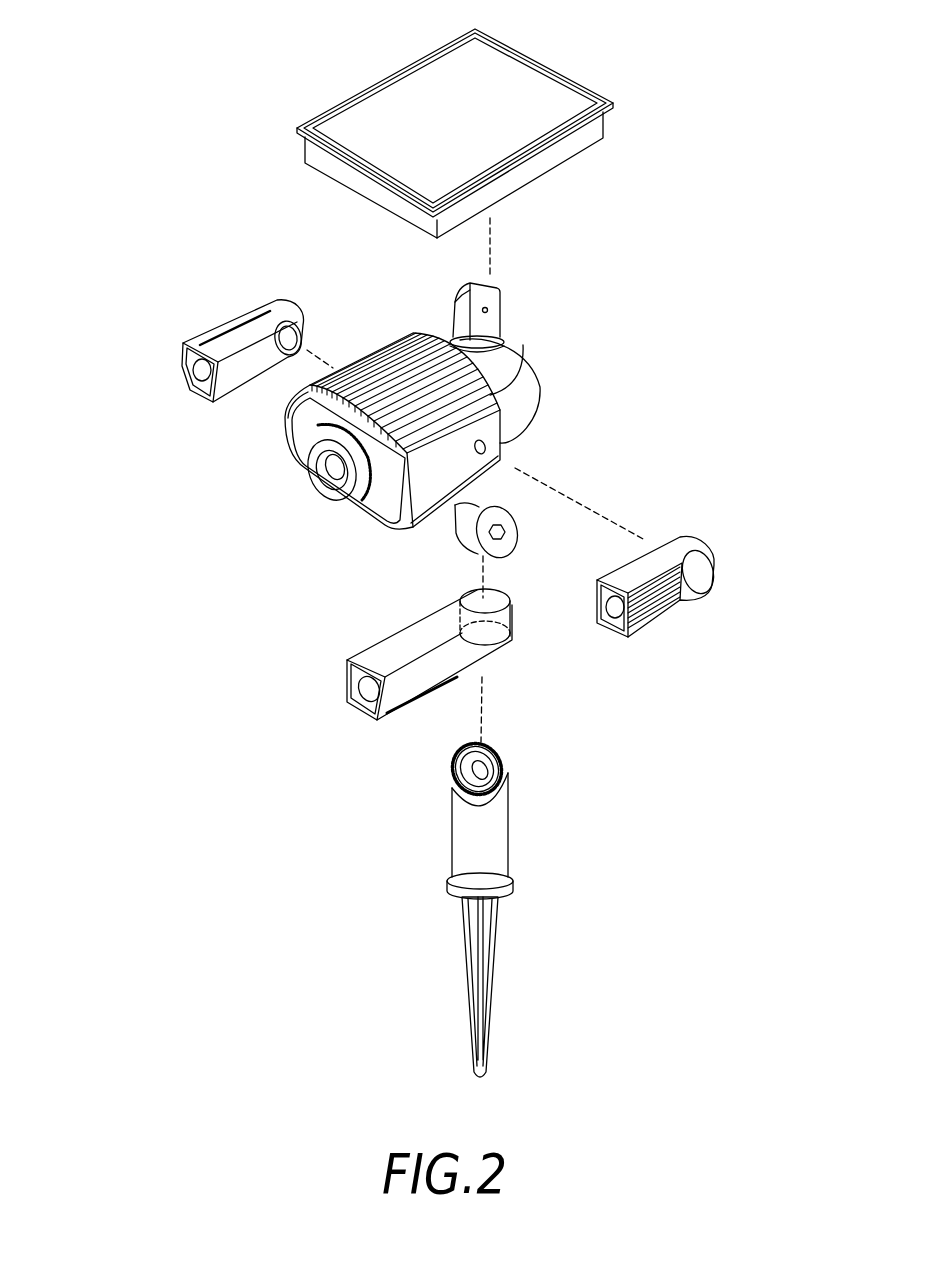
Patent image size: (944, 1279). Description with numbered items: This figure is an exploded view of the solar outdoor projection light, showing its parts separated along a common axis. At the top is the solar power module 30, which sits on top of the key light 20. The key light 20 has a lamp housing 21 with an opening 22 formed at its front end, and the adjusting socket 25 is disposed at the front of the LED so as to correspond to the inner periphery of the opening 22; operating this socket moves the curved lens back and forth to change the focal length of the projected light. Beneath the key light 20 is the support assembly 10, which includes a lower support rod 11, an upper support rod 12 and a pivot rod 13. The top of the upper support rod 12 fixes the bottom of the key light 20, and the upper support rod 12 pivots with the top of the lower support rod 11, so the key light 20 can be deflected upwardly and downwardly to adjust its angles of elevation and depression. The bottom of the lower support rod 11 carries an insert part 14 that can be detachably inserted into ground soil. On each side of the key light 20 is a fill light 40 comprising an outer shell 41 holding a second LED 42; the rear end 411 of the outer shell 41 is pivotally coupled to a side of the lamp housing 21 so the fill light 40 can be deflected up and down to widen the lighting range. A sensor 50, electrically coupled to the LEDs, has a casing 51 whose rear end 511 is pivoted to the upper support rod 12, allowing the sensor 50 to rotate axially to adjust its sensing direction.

The support assembly 10 is at (499, 905).
The lower support rod 11 is at (450, 838).
The upper support rod 12 is at (507, 486).
The pivot rod 13 is at (505, 300).
The insert part 14 is at (495, 997).
The key light 20 is at (290, 492).
The lamp housing 21 is at (535, 362).
The opening 22 is at (297, 434).
The adjusting socket 25 is at (353, 500).
The solar power module 30 is at (600, 90).
The fill light 40 is at (449, 471).
The outer shell 41 is at (213, 330).
The rear end 411 is at (310, 328).
The second LED 42 is at (200, 380).
The sensor 50 is at (417, 662).
The casing 51 is at (378, 640).
The rear end 511 is at (507, 590).